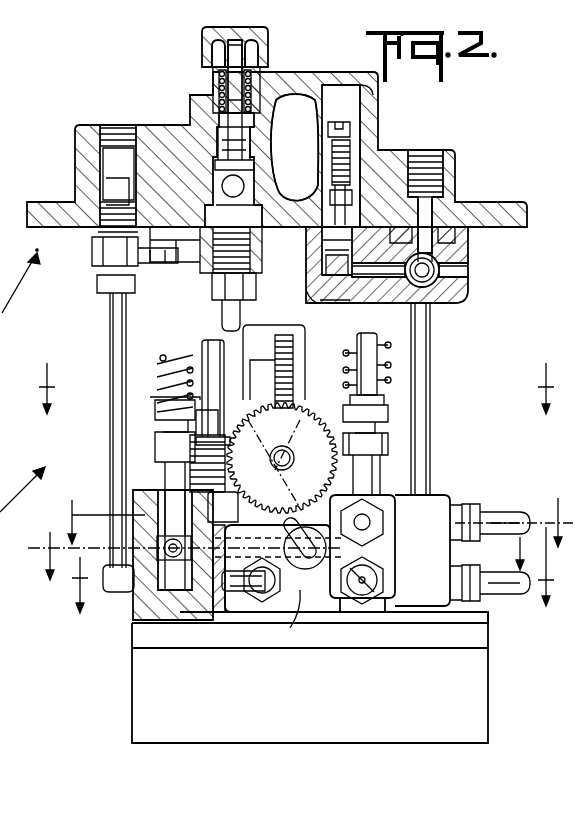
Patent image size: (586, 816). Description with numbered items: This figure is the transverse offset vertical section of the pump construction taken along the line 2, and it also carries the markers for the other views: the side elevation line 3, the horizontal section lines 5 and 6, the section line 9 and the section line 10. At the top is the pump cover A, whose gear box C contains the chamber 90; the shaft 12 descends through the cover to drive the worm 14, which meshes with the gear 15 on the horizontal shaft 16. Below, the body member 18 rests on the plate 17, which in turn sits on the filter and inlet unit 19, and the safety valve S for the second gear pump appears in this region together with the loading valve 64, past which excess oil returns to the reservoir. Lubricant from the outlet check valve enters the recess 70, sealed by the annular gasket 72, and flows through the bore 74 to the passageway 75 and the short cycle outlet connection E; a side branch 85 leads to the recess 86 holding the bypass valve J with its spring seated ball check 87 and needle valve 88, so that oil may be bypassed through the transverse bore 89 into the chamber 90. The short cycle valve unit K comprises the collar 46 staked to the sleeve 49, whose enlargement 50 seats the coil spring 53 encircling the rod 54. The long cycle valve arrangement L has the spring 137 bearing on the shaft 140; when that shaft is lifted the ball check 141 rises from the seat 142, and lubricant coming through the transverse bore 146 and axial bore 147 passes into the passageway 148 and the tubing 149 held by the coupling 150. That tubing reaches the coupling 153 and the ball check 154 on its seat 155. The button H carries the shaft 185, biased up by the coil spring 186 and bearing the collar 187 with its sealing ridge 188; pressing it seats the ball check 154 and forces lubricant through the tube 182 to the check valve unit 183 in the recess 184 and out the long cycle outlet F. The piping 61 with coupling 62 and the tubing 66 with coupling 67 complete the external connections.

The pump cover A is at (487, 200).
The long cycle manual control button H is at (268, 32).
The shaft 185 is at (212, 30).
The coil spring 186 is at (212, 68).
The collar 187 is at (262, 112).
The intermediate ridge 188 is at (213, 80).
The ball check 154 is at (215, 140).
The transverse bore 89 is at (293, 170).
The short cycle adjustable bypass valve J is at (334, 122).
The chamber 90 is at (378, 100).
The top gear box C is at (385, 128).
The adjustment needle valve 88 is at (353, 186).
The short cycle outlet connection E is at (430, 170).
The passageway 75 is at (440, 188).
The long cycle outlet connection F is at (112, 125).
The seat 155 is at (167, 193).
The top recess 184 is at (76, 200).
The check valve unit 183 is at (95, 248).
The tube 182 is at (111, 483).
The compression coupling connection 153 is at (212, 284).
The outlet tubing 149 is at (224, 312).
The recess 70 is at (440, 282).
The annular gasket 72 is at (432, 238).
The bore 74 is at (432, 262).
The spring seated ball check 87 is at (322, 258).
The recess 86 is at (332, 282).
The side branch 85 is at (345, 300).
The shaft 12 is at (205, 343).
The spring 137 is at (160, 357).
The long cycle reciprocating valve arrangement L is at (165, 408).
The shaft 140 is at (172, 460).
The worm 14 is at (192, 470).
The ball check 141 is at (224, 507).
The horizontal shaft 16 is at (282, 458).
The gear 15 is at (305, 400).
The rod 54 is at (372, 335).
The coil spring 53 is at (385, 363).
The enlargement 50 is at (392, 400).
The short cycle reciprocating valve unit K is at (390, 436).
The collar 46 is at (390, 450).
The sleeve 49 is at (370, 480).
The safety valve S is at (410, 618).
The loading valve 64 is at (372, 525).
The compression coupling connection 67 is at (458, 548).
The transverse bore 146 is at (202, 612).
The compression coupling connection 150 is at (268, 595).
The passageway 148 is at (263, 506).
The seat 142 is at (135, 608).
The axial bore 147 is at (185, 615).
The compression coupling connection 62 is at (470, 505).
The piping 61 is at (500, 512).
The tubing 66 is at (470, 581).
The body member 18 is at (440, 620).
The plate 17 is at (458, 638).
The filter and inlet unit 19 is at (465, 698).
The section line 5- 5 is at (293, 388).
The section line 9- 9 is at (313, 521).
The section line 10- 10 is at (286, 551).
The section line 6- 6 is at (310, 570).
The side elevation line 3- 3 is at (21, 281).
The section line 2- 2 is at (22, 489).